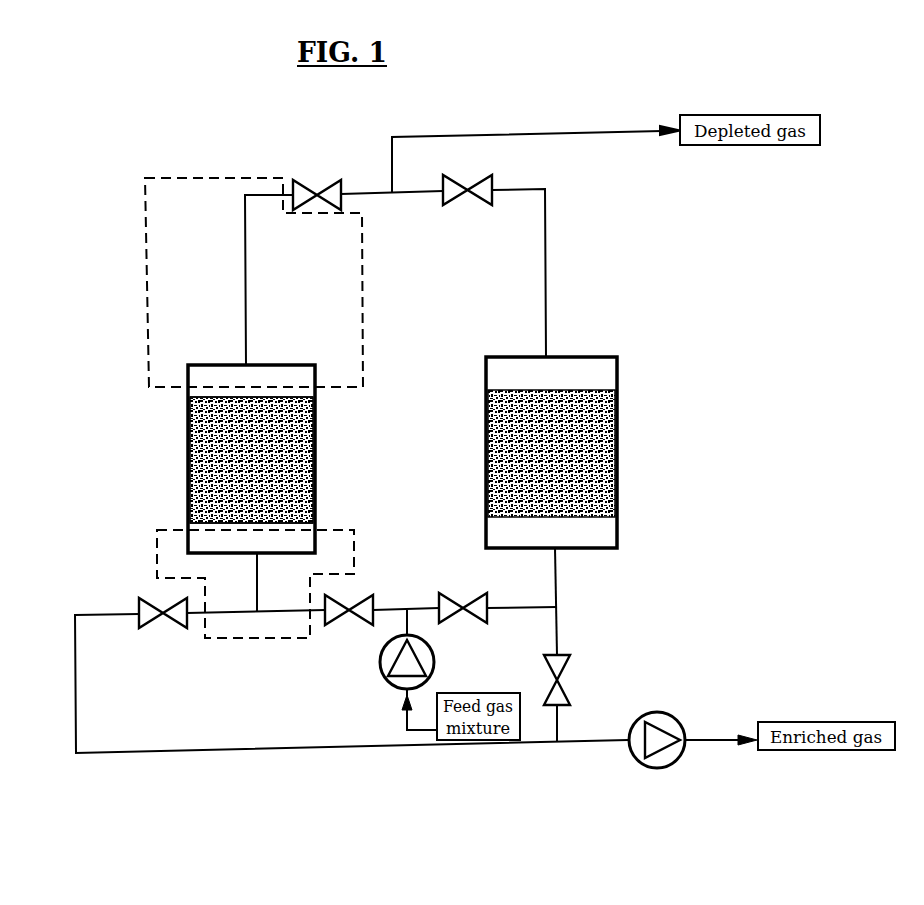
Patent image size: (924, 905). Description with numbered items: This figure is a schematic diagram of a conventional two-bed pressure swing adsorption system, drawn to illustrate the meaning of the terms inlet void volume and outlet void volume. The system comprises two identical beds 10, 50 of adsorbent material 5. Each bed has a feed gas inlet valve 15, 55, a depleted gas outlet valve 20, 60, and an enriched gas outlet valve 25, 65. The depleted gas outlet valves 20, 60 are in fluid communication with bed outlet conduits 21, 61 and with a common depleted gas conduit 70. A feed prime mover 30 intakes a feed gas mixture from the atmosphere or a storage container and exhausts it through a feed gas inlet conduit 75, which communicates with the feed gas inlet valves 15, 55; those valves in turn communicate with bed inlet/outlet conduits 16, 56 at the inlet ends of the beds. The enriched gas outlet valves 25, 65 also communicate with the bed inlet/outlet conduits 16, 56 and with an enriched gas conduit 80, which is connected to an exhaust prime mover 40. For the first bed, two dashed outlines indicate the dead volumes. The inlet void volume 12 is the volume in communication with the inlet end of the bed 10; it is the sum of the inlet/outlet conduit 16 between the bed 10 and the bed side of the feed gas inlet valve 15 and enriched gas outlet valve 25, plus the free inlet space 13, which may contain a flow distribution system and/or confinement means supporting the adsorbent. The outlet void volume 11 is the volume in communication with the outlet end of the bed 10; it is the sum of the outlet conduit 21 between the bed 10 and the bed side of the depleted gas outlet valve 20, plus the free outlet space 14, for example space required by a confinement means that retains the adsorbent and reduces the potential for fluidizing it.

The adsorbent material 5 is at (490, 442).
The bed of adsorbent material 10 is at (190, 488).
The outlet void volume 11 is at (147, 215).
The inlet void volume 12 is at (157, 553).
The free inlet space 13 is at (210, 542).
The free outlet space 14 is at (203, 380).
The feed gas inlet valve 15 is at (367, 595).
The bed inlet/outlet conduit 16 is at (257, 600).
The depleted gas outlet valve 20 is at (307, 185).
The bed outlet conduit 21 is at (245, 335).
The enriched gas outlet valve 25 is at (163, 630).
The feed prime mover 30 is at (395, 688).
The exhaust prime mover 40 is at (657, 713).
The bed of adsorbent material 50 is at (617, 478).
The feed gas inlet valve 55 is at (465, 626).
The bed inlet/outlet conduit 56 is at (559, 580).
The depleted gas outlet valve 60 is at (416, 174).
The bed outlet conduit 61 is at (548, 327).
The enriched gas outlet valve 65 is at (572, 690).
The depleted gas conduit 70 is at (540, 135).
The feed gas inlet conduit 75 is at (385, 607).
The enriched gas conduit 80 is at (268, 750).